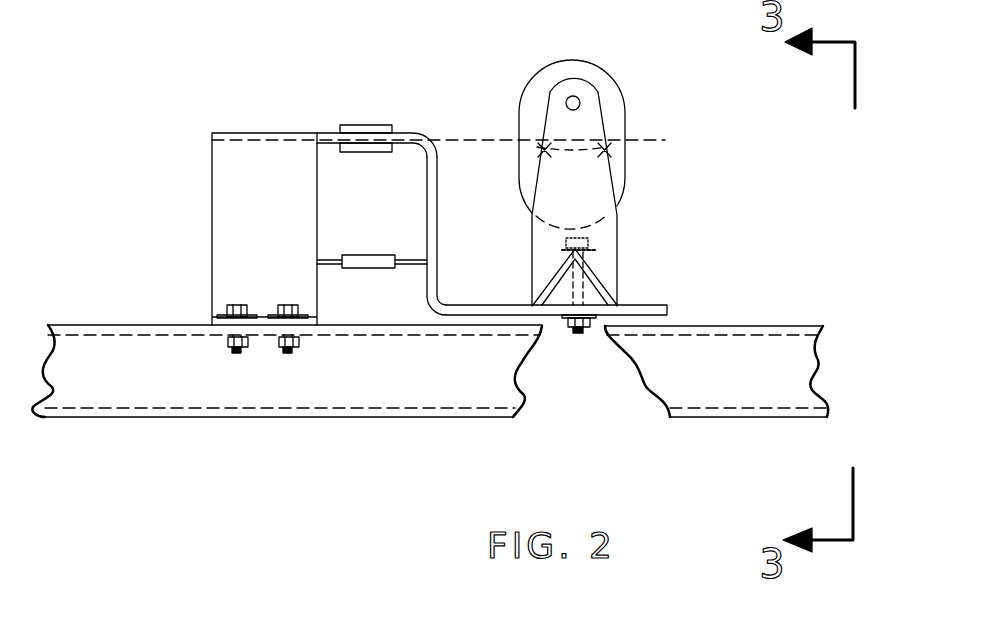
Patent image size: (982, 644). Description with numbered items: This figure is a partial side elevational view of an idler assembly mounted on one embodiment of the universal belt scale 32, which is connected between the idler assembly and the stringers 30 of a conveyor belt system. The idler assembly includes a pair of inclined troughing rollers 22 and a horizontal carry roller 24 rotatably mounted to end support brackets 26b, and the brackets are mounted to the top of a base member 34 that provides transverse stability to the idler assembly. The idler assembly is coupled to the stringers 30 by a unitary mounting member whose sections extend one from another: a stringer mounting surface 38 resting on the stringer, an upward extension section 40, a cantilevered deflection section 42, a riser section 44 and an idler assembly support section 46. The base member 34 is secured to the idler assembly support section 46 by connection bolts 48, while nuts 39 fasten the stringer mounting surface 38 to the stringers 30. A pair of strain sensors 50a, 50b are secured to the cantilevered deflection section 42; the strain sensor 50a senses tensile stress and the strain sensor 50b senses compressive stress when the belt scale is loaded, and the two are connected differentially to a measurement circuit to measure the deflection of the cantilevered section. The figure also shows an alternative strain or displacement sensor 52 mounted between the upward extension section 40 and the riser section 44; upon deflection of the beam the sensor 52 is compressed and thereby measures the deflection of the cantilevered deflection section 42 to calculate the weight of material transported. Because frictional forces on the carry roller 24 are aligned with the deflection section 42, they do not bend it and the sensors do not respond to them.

The inclined troughing roller 22 is at (548, 80).
The horizontal carry roller 24 is at (563, 192).
The end support bracket 26b is at (536, 240).
The stringer 30 is at (472, 387).
The universal belt scale 32 is at (360, 58).
The base member 34 is at (600, 280).
The stringer mounting surface 38 is at (222, 323).
The nut 39 is at (233, 352).
The upward extension section 40 is at (220, 203).
The cantilevered deflection section 42 is at (322, 141).
The riser section 44 is at (438, 202).
The idler assembly support section 46 is at (485, 305).
The connection bolt 48 is at (568, 335).
The strain sensor 50a is at (367, 125).
The strain sensor 50b is at (363, 152).
The strain or displacement sensor 52 is at (360, 268).